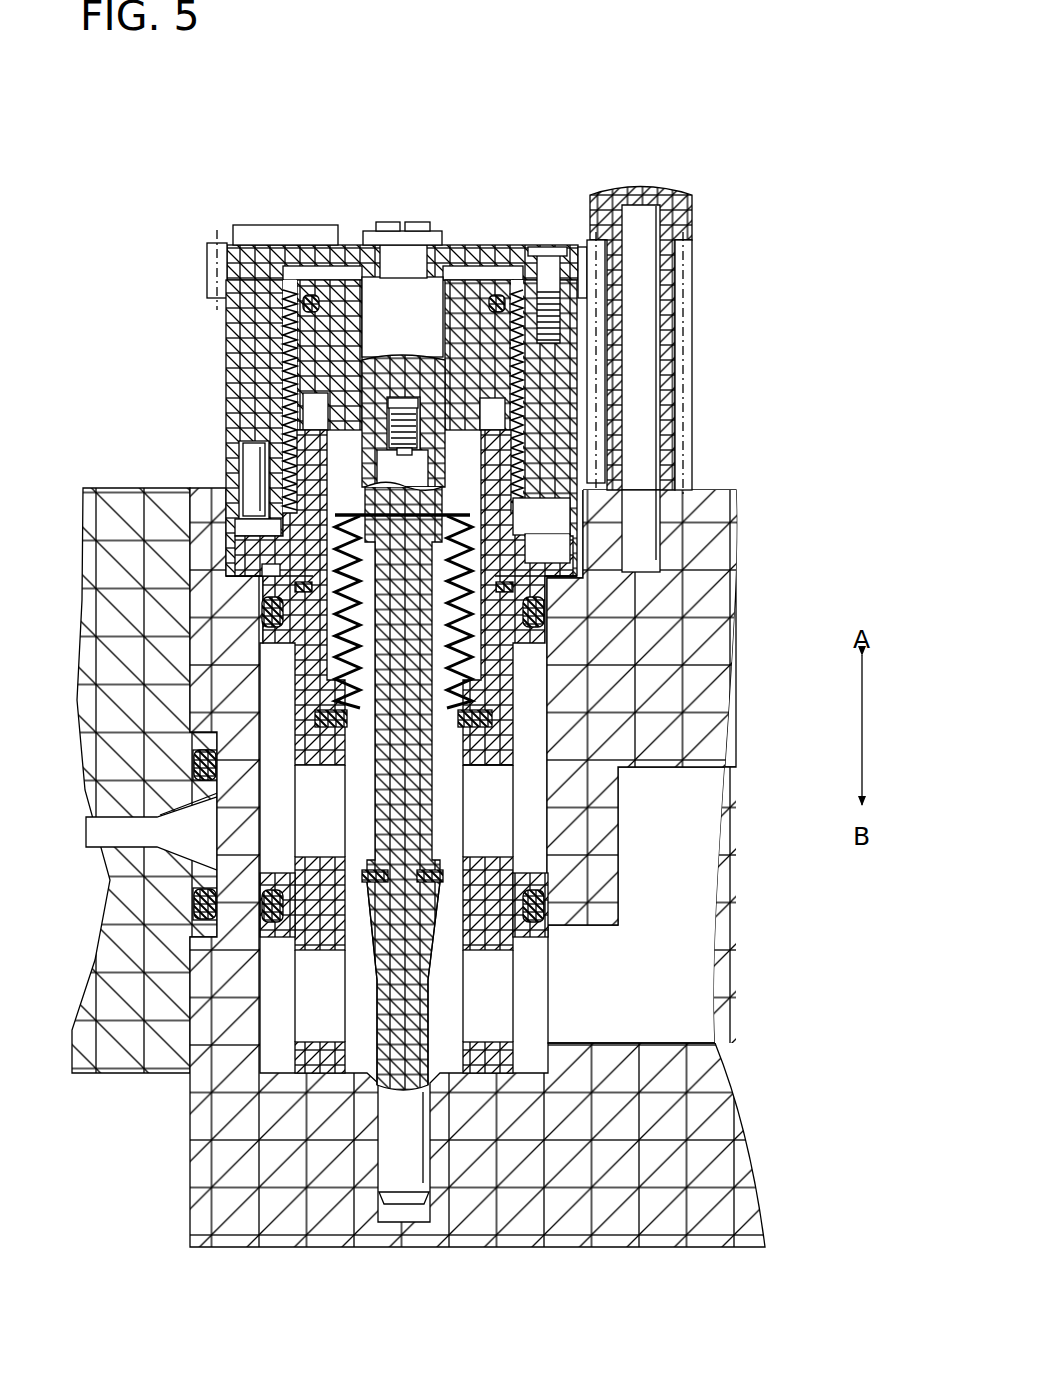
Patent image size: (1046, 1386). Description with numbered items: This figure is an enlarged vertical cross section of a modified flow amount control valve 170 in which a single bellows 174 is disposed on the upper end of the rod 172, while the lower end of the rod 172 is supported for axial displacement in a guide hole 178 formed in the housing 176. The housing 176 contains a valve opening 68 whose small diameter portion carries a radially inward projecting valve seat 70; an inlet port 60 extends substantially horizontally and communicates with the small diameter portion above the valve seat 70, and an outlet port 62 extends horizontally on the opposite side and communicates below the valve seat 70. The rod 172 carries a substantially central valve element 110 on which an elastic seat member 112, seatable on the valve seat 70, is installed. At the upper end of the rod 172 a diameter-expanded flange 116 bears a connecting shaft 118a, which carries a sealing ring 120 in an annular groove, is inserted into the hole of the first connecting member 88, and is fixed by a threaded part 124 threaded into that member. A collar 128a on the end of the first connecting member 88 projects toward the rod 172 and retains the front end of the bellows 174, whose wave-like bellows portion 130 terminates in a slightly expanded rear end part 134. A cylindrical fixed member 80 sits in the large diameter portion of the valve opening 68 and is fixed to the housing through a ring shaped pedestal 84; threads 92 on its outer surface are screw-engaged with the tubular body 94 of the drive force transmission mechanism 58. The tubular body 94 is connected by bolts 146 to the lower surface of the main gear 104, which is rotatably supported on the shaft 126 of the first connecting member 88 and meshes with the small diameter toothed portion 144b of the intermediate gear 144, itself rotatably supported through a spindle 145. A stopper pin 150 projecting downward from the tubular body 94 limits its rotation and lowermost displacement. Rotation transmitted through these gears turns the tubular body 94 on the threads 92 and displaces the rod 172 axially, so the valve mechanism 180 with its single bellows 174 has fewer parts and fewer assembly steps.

The flow amount control valve 170 is at (186, 137).
The drive force transmission mechanism 58 is at (353, 202).
The main gear 104 is at (258, 262).
The shaft 126 is at (395, 258).
The first connecting member 88 is at (420, 292).
The bolts 146 is at (548, 268).
The intermediate gear 144 is at (683, 218).
The small diameter toothed portion 144b is at (683, 300).
The spindle 145 is at (640, 372).
The tubular body 94 is at (240, 342).
The connecting shaft 118a is at (360, 462).
The stopper pin 150 is at (255, 463).
The threaded part 124 is at (413, 432).
The collar 128a is at (437, 500).
The threads 92 is at (522, 511).
The fixed member 80 is at (520, 537).
The pedestal 84 is at (545, 563).
The flange 116 is at (338, 532).
The bellows portion 130 is at (336, 632).
The bellows 174 is at (460, 670).
The sealing ring 120 is at (320, 718).
The rear end part 134 is at (492, 715).
The inlet port 60 is at (157, 820).
The valve opening 68 is at (460, 790).
The valve mechanism 180 is at (444, 828).
The seat member 112 is at (440, 872).
The valve seat 70 is at (197, 905).
The rod 172 is at (432, 1018).
The outlet port 62 is at (680, 970).
The valve element 110 is at (393, 940).
The housing 176 is at (186, 1137).
The guide hole 178 is at (412, 1200).